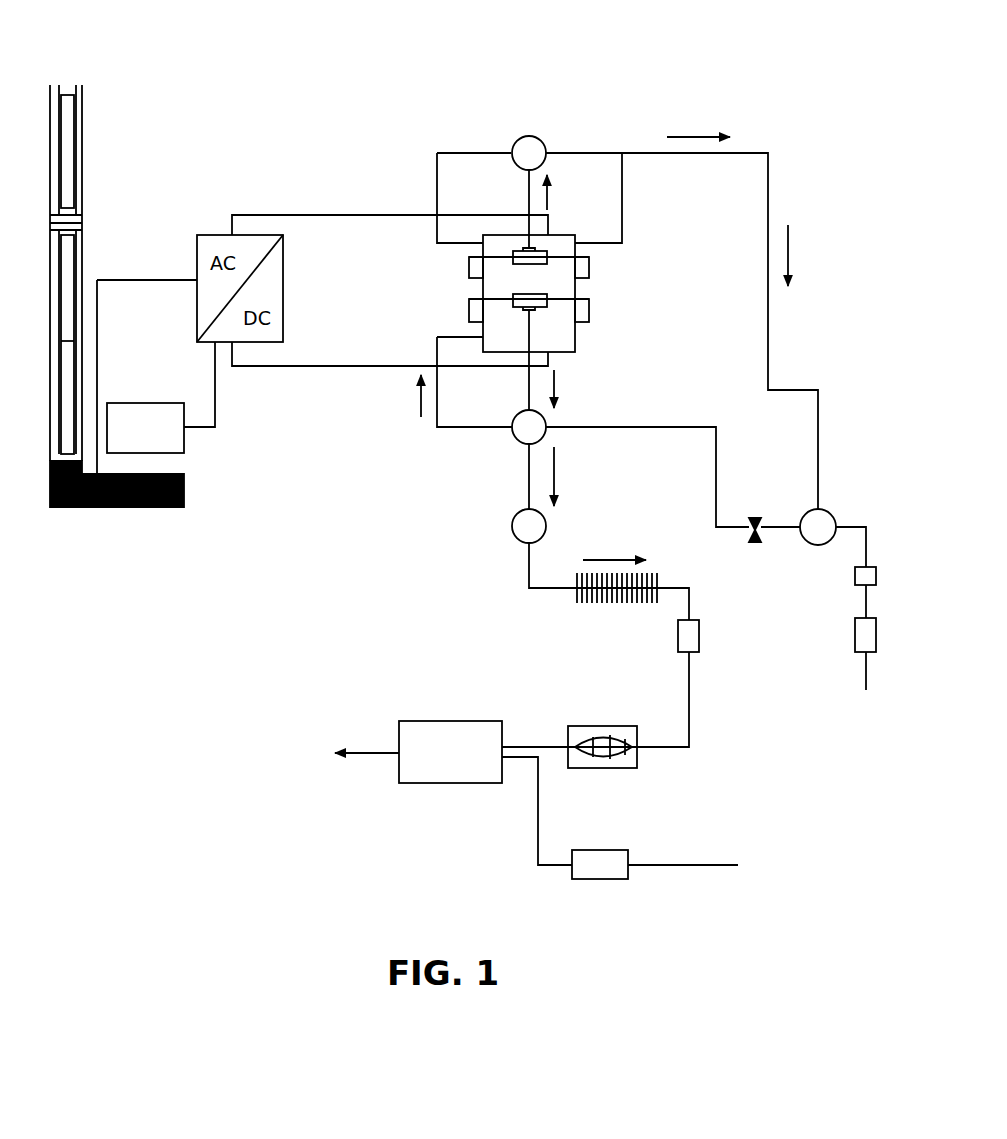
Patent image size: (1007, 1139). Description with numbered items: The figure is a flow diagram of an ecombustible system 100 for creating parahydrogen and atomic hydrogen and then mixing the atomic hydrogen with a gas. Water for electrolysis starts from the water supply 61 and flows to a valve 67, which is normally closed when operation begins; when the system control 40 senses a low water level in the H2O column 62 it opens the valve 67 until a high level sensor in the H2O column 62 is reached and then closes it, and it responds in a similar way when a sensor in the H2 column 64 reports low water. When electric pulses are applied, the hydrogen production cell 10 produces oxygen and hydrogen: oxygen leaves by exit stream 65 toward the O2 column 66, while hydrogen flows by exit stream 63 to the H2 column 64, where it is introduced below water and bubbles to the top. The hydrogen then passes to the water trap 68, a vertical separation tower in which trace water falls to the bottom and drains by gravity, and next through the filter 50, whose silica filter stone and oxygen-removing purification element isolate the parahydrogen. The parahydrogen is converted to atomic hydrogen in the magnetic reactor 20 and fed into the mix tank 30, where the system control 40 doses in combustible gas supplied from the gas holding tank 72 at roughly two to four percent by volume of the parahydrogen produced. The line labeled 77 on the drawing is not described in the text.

The ecombustible system 100 is at (773, 110).
The O2 column 66 is at (530, 136).
The hydrogen production cell 10 is at (575, 338).
The exit stream 65 is at (469, 266).
The exit stream 63 is at (589, 310).
The system control 40 is at (146, 403).
The H2 column 64 is at (513, 438).
The water trap 68 is at (512, 522).
The H2O column 62 is at (832, 513).
The valve 67 is at (855, 577).
The water supply 61 is at (866, 672).
The filter 50 is at (612, 603).
The mix tank 30 is at (443, 721).
The magnetic reactor 20 is at (623, 768).
The gas holding tank 72 is at (600, 879).
The oxygen outlet line 77 is at (735, 865).